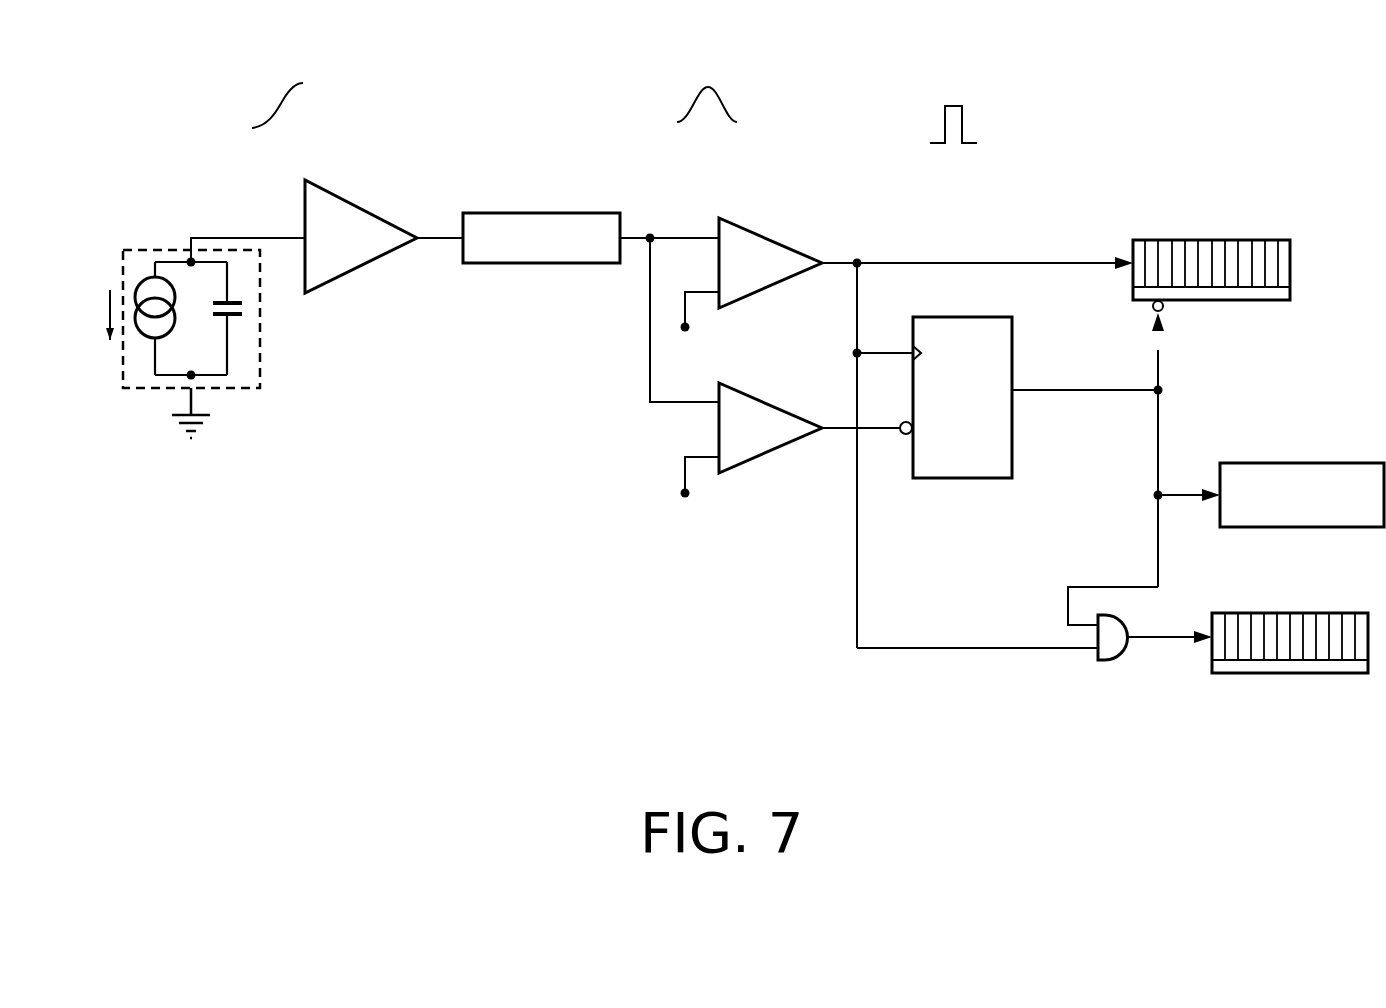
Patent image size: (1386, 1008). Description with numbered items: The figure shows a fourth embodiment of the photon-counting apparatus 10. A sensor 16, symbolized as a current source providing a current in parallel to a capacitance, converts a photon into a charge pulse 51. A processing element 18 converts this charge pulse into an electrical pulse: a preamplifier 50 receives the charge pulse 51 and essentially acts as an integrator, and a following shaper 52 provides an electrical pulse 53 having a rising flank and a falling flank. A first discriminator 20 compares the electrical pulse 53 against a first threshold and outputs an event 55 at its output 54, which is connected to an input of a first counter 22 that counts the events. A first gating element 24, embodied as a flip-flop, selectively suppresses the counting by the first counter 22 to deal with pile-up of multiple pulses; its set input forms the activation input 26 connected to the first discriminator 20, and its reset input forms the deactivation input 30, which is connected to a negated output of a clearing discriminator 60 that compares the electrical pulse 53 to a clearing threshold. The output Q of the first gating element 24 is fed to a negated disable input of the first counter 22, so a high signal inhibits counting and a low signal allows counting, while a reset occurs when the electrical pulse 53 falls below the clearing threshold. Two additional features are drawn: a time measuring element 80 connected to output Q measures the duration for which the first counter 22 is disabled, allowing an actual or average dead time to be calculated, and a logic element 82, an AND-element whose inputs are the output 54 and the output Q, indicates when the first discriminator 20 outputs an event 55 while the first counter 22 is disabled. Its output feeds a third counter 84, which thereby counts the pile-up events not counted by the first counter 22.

The apparatus 10 is at (266, 538).
The sensor 16 is at (185, 168).
The processing element 18 is at (441, 125).
The first discriminator 20 is at (745, 292).
The first counter 22 is at (1218, 240).
The first gating element 24 is at (970, 478).
The activation input 26 is at (913, 340).
The deactivation input 30 is at (912, 442).
The preamplifier 50 is at (361, 236).
The charge pulse 51 is at (245, 205).
The shaper 52 is at (541, 238).
The electrical pulse 53 is at (682, 200).
The output of the first discriminator 54 is at (857, 260).
The event 55 is at (913, 222).
The clearing discriminator 60 is at (784, 457).
The time measuring element 80 is at (1269, 488).
The logic element 82 is at (1112, 660).
The third counter 84 is at (1320, 613).